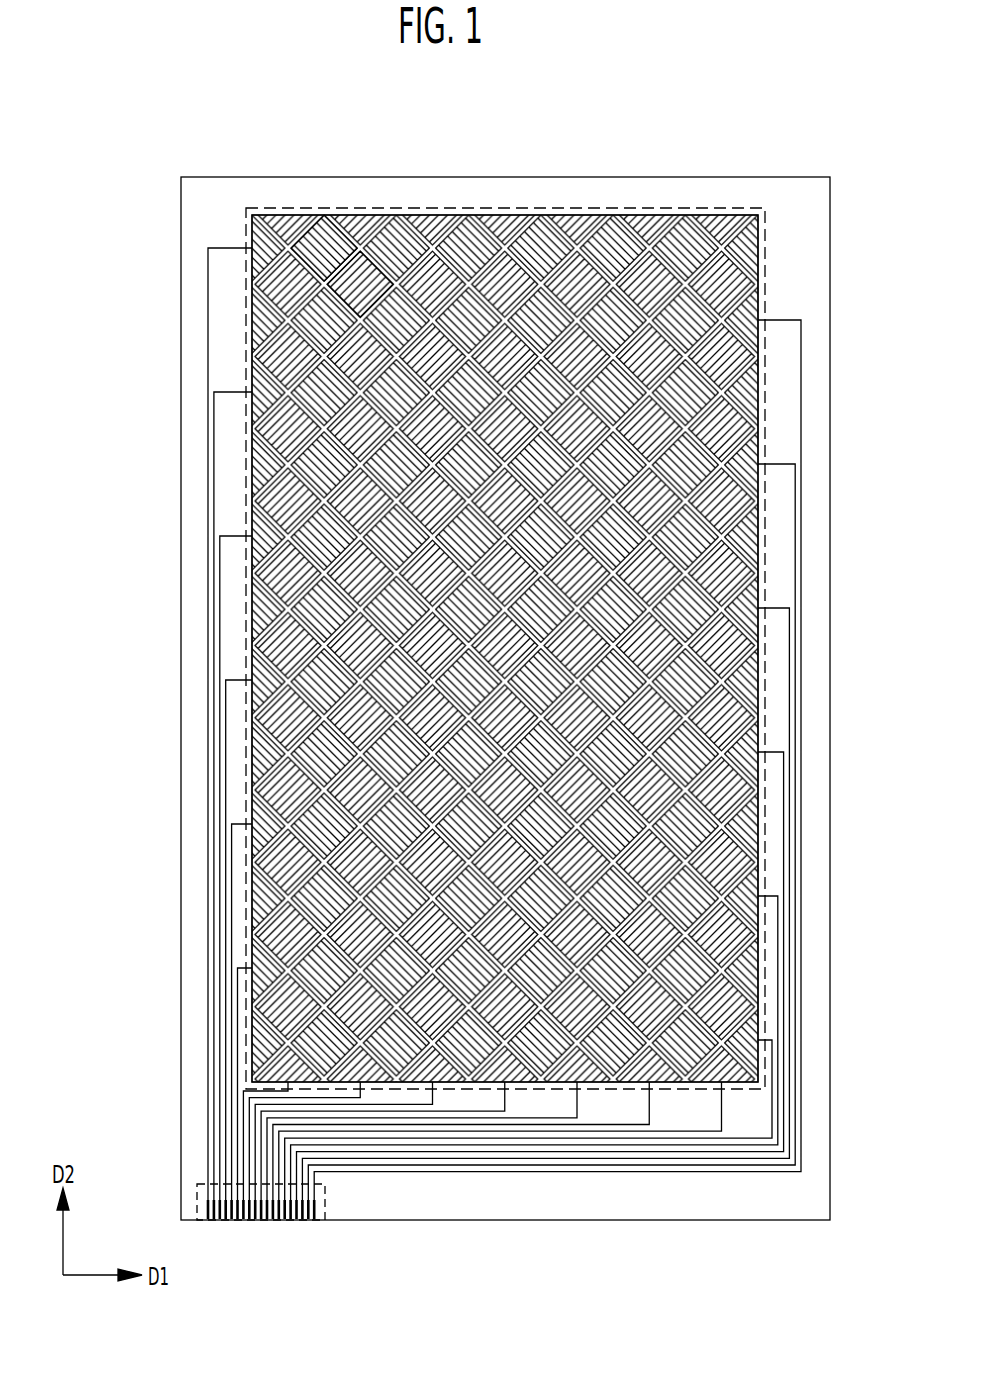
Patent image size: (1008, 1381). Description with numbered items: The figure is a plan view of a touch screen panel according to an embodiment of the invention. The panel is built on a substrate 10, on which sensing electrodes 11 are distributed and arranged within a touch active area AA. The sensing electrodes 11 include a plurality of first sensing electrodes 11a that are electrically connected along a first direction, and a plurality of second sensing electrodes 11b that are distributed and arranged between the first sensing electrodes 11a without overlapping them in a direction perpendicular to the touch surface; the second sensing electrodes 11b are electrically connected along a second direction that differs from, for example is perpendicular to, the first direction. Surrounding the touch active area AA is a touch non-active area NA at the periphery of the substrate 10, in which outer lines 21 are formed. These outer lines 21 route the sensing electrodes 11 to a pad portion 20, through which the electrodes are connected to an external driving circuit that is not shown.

The substrate 10 is at (638, 178).
The sensing electrodes 11 is at (455, 117).
The first sensing electrodes 11a is at (329, 240).
The second sensing electrodes 11b is at (387, 267).
The pad portion 20 is at (325, 1202).
The outer lines 21 is at (208, 295).
The touch active area AA is at (765, 239).
The touch non-active area NA is at (810, 283).